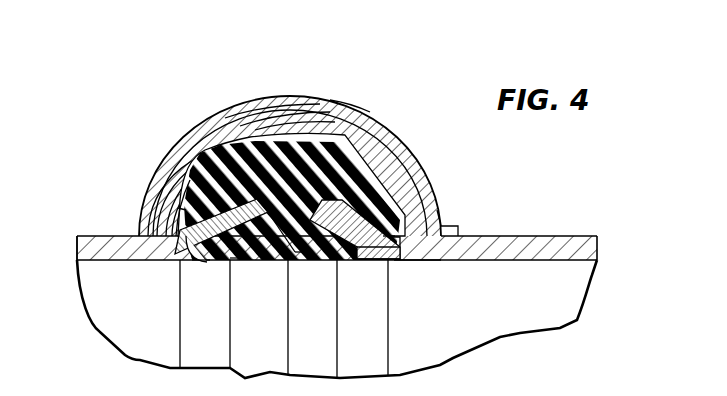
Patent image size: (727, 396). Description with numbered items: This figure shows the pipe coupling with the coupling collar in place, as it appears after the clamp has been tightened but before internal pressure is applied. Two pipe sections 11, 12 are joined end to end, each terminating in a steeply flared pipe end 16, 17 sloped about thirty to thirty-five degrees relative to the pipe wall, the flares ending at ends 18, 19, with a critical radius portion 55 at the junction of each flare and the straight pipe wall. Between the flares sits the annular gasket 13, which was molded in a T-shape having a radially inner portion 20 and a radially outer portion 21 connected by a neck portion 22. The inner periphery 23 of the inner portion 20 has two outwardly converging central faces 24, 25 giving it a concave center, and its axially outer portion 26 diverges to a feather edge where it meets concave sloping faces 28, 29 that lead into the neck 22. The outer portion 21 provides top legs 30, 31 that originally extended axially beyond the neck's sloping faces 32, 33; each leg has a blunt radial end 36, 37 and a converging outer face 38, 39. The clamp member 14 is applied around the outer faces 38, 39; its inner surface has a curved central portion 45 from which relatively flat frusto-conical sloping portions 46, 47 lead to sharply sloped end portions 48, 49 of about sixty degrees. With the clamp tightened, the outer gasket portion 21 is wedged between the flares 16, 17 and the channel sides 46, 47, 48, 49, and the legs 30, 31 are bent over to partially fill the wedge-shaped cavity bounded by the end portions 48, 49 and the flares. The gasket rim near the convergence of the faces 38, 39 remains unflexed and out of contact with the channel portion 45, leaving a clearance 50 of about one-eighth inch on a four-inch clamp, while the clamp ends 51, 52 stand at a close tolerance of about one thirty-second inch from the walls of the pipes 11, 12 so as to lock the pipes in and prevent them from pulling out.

The pipe section 11 is at (78, 236).
The pipe section 12 is at (580, 237).
The annular gasket 13 is at (413, 155).
The clamp member 14 is at (293, 140).
The flared pipe end 16 is at (205, 248).
The flared pipe end 17 is at (383, 250).
The end of flared portion 18 is at (215, 150).
The end of flared portion 19 is at (252, 125).
The radially inner portion 20 is at (270, 255).
The radially outer portion 21 is at (285, 148).
The neck portion 22 is at (352, 245).
The inner periphery 23 is at (302, 250).
The central face 24 is at (268, 250).
The central face 25 is at (295, 255).
The axially outer portion 26 is at (195, 262).
The sloping face 28 is at (240, 255).
The sloping face 29 is at (378, 262).
The top leg 30 is at (190, 178).
The top leg 31 is at (425, 170).
The sloping face of neck 32 is at (207, 162).
The sloping face of neck 33 is at (377, 245).
The radial end of leg 36 is at (160, 198).
The radial end of leg 37 is at (435, 260).
The outer face of leg 38 is at (236, 116).
The outer face of leg 39 is at (340, 102).
The curved central portion 45 is at (303, 140).
The sloping portion 46 is at (228, 152).
The sloping portion 47 is at (380, 178).
The end portion 48 is at (187, 195).
The end portion 49 is at (440, 210).
The clearance 50 is at (265, 126).
The clamp end 51 is at (150, 230).
The clamp end 52 is at (458, 226).
The radius portion 55 is at (178, 208).